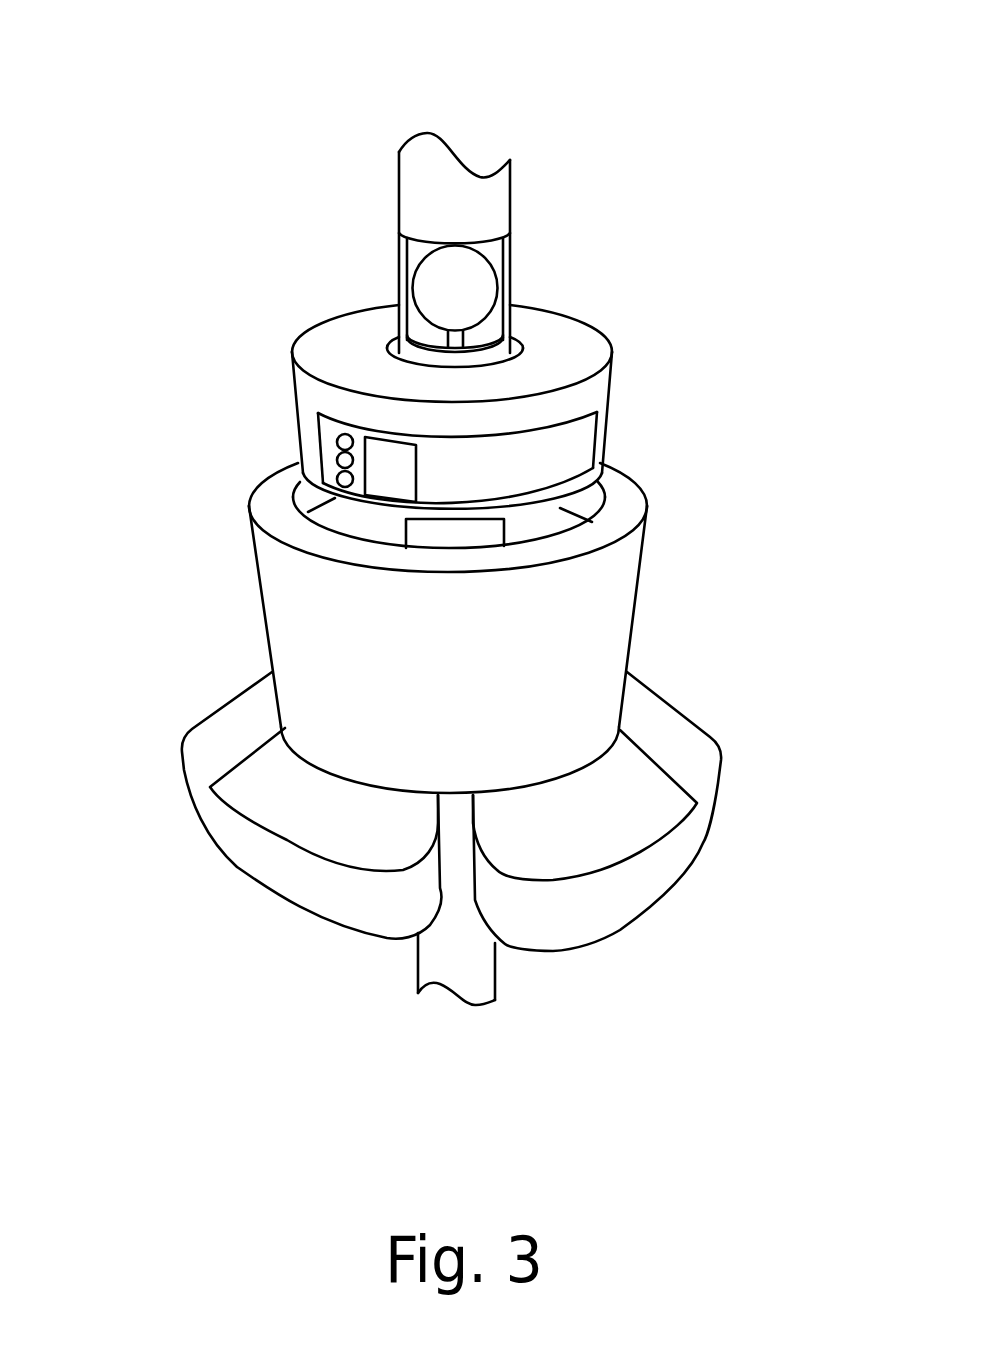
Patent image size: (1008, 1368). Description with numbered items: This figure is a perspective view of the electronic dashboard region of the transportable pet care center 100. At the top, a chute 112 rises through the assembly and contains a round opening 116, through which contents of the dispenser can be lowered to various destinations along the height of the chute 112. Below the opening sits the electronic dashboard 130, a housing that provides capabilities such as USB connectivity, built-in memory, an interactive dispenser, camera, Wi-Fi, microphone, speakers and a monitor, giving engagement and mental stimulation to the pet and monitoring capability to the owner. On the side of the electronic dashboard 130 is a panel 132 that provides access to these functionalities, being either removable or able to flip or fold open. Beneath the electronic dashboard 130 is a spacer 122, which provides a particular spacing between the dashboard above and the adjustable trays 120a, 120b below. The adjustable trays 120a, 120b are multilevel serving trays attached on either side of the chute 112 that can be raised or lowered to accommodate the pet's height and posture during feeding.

The transportable pet care center 100 is at (375, 52).
The chute 112 is at (399, 193).
The round opening 116 is at (485, 297).
The electronic dashboard 130 is at (600, 397).
The panel 132 is at (573, 462).
The spacer 122 is at (622, 618).
The adjustable tray 120a is at (193, 798).
The adjustable tray 120b is at (710, 820).